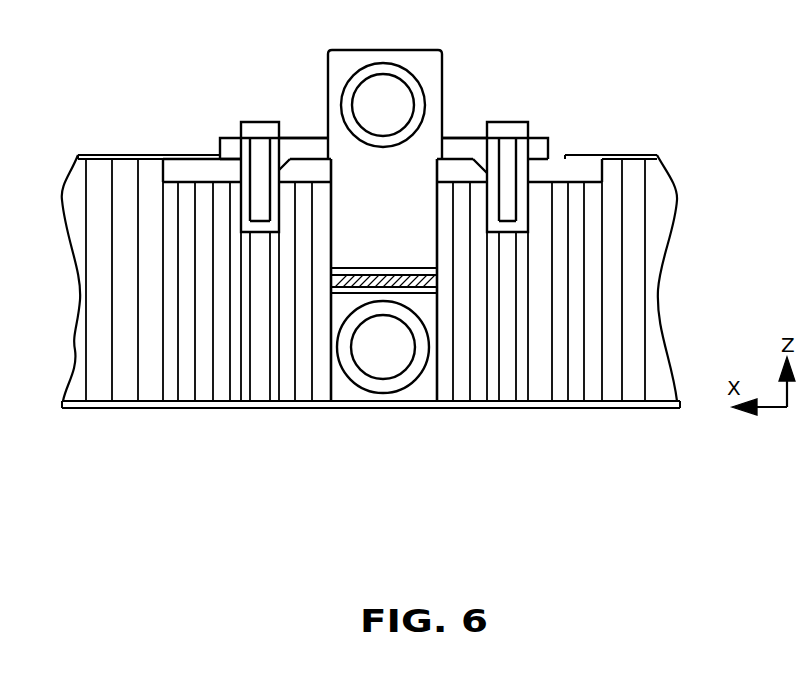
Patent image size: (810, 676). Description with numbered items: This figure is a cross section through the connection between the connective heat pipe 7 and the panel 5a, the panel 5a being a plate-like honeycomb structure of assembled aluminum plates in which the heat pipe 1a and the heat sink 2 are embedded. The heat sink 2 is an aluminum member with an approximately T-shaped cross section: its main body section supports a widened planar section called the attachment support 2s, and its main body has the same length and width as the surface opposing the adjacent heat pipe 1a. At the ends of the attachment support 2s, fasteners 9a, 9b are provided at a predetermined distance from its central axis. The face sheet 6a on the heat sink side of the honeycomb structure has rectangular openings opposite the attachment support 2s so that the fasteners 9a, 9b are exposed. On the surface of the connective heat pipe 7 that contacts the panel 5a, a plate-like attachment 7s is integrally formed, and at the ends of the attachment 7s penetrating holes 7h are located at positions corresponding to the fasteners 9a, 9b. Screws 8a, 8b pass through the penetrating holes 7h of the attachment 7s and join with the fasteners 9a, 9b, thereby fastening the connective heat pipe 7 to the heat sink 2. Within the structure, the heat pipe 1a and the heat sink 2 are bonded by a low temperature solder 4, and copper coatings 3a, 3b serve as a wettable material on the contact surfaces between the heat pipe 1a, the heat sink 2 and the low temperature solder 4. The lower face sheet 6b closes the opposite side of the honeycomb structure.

The connective heat pipe 7 is at (423, 67).
The heat sink 2 is at (467, 148).
The attachment support 2s is at (178, 156).
The face sheet 6a is at (120, 155).
The panel 5a is at (633, 253).
The fastener 9a is at (185, 167).
The fastener 9b is at (580, 175).
The copper coating 3a is at (336, 297).
The copper coating 3b is at (372, 230).
The screw 8a is at (248, 122).
The screw 8b is at (522, 177).
The penetrating hole 7h is at (243, 147).
The attachment 7s is at (298, 137).
The low temperature solder 4 is at (410, 293).
The heat pipe 1a is at (415, 387).
The base plate 6b is at (197, 402).